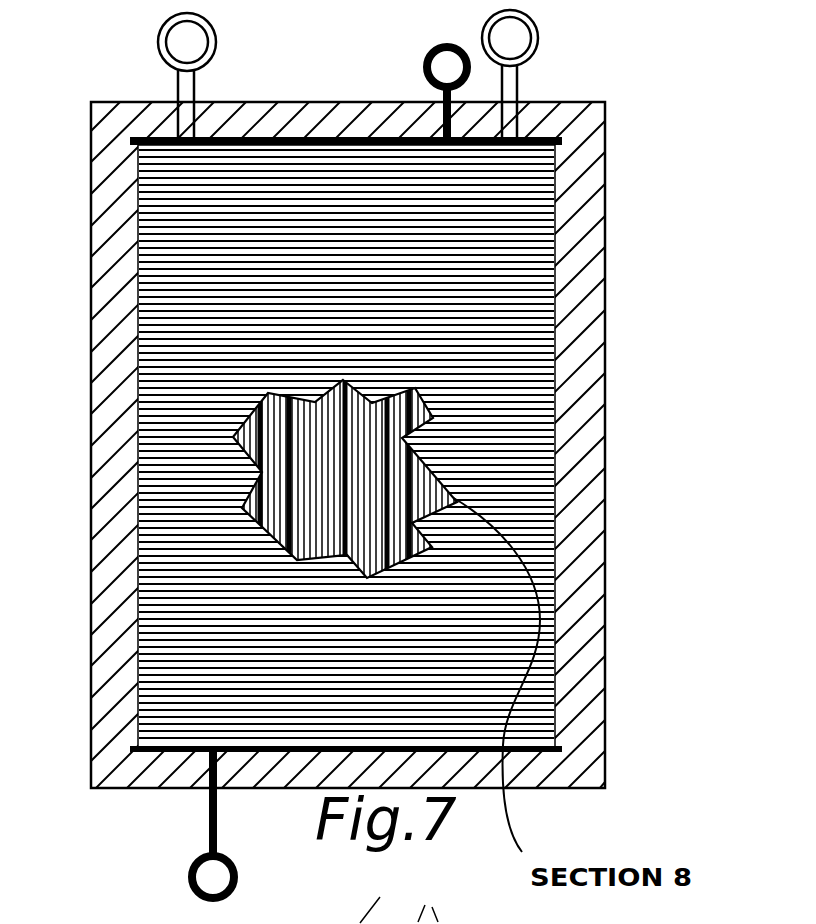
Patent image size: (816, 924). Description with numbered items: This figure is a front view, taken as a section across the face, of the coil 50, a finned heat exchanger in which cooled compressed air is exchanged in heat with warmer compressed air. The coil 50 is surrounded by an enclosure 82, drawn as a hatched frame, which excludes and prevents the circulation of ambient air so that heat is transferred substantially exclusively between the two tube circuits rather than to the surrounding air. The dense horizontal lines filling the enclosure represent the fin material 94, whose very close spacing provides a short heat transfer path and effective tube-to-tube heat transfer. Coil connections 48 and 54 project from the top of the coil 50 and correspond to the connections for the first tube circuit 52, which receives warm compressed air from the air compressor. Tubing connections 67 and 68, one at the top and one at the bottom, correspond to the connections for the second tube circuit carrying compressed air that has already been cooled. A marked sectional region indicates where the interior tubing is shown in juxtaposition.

The coil connection 48 is at (217, 42).
The coil connection 54 is at (487, 22).
The tubing connection 67 is at (425, 55).
The tubing connection 68 is at (188, 872).
The enclosure 82 is at (110, 783).
The fin material 94 is at (523, 457).
The heat exchanger coil 50 is at (325, 722).
The first tube circuit 52 is at (399, 908).